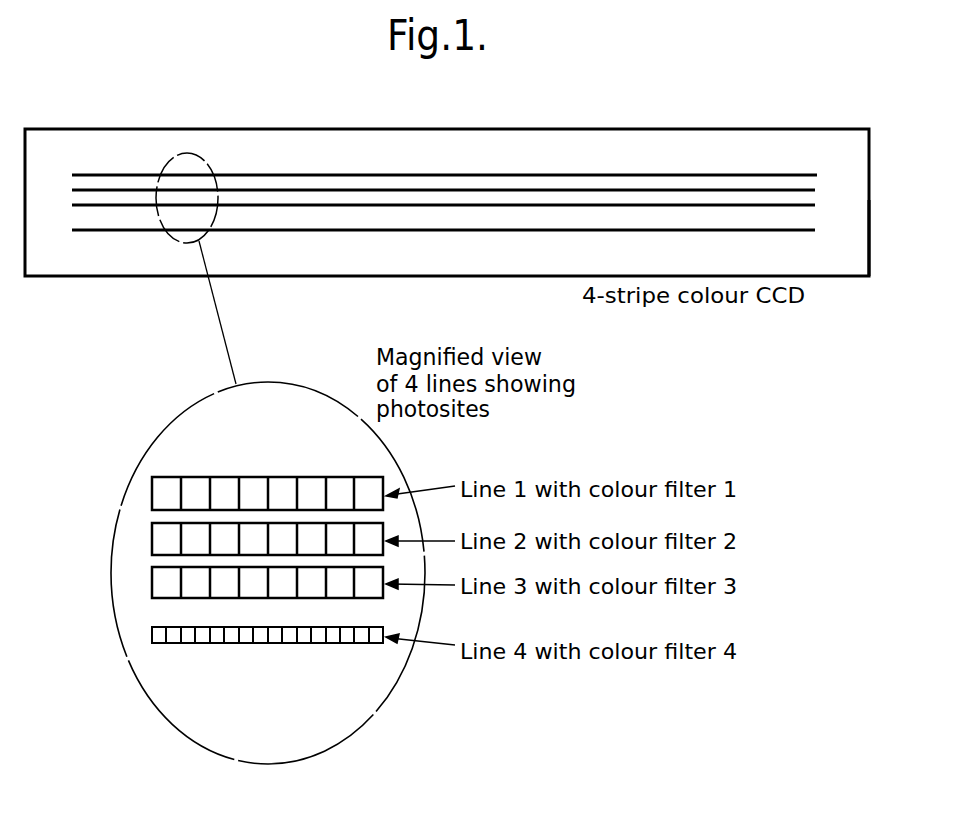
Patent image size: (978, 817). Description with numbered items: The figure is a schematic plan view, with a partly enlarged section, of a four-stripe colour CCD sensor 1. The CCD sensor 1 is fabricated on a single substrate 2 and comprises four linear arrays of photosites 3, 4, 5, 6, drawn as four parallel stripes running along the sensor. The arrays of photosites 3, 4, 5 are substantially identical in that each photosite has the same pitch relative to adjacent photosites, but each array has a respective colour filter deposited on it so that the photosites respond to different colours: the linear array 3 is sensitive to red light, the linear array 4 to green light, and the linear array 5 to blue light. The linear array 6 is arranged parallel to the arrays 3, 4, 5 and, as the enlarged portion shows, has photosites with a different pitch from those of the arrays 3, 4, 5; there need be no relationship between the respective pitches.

The CCD sensor 1 is at (532, 128).
The substrate 2 is at (859, 240).
The linear array of photosites 3 is at (817, 176).
The linear array of photosites 4 is at (812, 190).
The linear array of photosites 5 is at (813, 205).
The linear array of photosites 6 is at (813, 230).